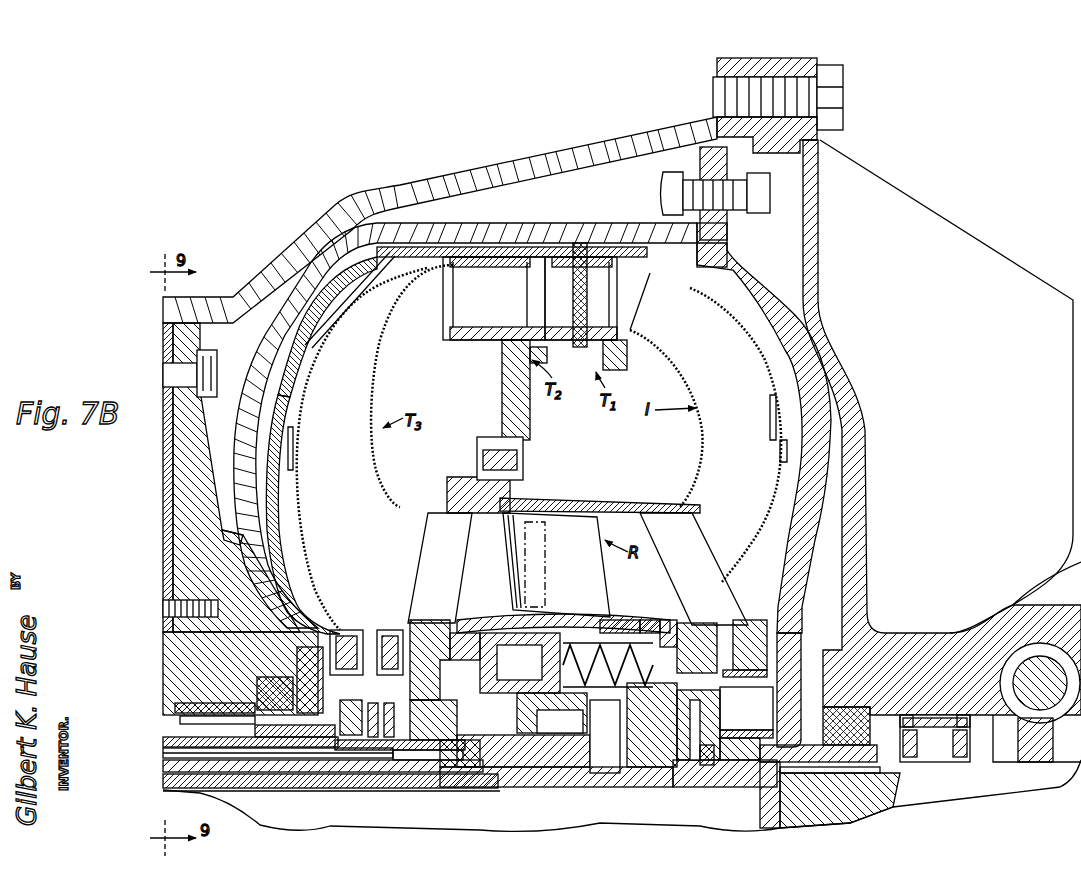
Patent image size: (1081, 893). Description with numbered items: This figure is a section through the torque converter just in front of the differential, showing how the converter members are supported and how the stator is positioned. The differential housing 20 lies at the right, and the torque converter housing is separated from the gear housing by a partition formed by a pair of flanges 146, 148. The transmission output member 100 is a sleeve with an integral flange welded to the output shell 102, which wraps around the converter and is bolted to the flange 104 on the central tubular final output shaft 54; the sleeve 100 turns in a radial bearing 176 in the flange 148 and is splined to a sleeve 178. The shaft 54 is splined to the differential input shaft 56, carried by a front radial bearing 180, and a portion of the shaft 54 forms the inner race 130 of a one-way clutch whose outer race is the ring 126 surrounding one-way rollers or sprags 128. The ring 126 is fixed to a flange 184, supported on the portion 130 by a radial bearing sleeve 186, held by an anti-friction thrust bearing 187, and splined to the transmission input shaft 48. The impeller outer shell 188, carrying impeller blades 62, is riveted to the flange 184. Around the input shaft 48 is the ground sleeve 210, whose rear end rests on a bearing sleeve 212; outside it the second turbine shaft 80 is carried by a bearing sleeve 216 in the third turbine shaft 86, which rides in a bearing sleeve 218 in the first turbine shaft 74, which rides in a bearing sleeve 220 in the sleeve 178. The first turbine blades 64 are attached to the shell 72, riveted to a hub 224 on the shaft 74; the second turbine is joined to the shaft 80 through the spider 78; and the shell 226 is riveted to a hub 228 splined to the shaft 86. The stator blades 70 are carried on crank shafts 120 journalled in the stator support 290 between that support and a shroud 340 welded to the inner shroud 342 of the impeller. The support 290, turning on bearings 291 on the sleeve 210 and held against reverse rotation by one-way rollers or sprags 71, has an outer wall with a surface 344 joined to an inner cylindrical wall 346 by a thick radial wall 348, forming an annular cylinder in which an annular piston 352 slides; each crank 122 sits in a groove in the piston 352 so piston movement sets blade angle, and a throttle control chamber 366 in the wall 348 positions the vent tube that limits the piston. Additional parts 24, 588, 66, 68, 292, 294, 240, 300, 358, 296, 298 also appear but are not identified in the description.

The outer housing shell 24 is at (520, 162).
The bolt and spacer flange 588 is at (712, 152).
The differential housing 20 is at (935, 218).
The hub chamber 66 is at (485, 268).
The first turbine blades 64 is at (597, 275).
The flange 104 is at (745, 285).
The liner band 68 is at (320, 375).
The impeller blades 62 is at (762, 382).
The shell 72 is at (270, 440).
The flange 146 is at (165, 460).
The flange 148 is at (190, 490).
The output shell 102 is at (195, 523).
The shell 226 is at (296, 478).
The spider 78 is at (465, 493).
The blades 70 is at (560, 520).
The shroud 340 is at (592, 504).
The inner shroud 342 is at (696, 450).
The outer shell 188 is at (788, 472).
The crank shafts 120 is at (545, 545).
The hub 224 is at (357, 625).
The hub 228 is at (390, 626).
The stator support 290 is at (485, 620).
The expansible chamber 366 is at (553, 625).
The surface 344 is at (620, 624).
The thick annular or radial wall 348 is at (660, 624).
The flange 184 is at (690, 620).
The block 292 is at (740, 640).
The outer race 126 is at (760, 640).
The seal 294 is at (240, 538).
The transmission output member 100 is at (163, 664).
The radial bearing 176 is at (185, 710).
The sleeve 178 is at (205, 718).
The first turbine shaft 74 is at (165, 742).
The third turbine shaft 86 is at (165, 757).
The ground sleeve 210 is at (165, 773).
The transmission input shaft 48 is at (165, 790).
The bearing sleeve 220 is at (265, 740).
The bearing sleeve 218 is at (292, 742).
The bearing sleeve 216 is at (328, 742).
The second turbine shaft 80 is at (345, 756).
The ring 240 is at (390, 756).
The hub 300 is at (430, 742).
The annular piston 352 is at (460, 747).
The inner cylindrical wall 346 is at (523, 746).
The bearings 291 is at (545, 760).
The hub 358 is at (585, 768).
The bearing sleeve 212 is at (620, 772).
The anti-friction thrust bearing 187 is at (676, 775).
The radial bearing sleeve 186 is at (720, 772).
The one-way rollers or sprags 128 is at (765, 713).
The inner race 130 is at (740, 732).
The final output shaft 54 is at (813, 737).
The front radial bearing 180 is at (945, 733).
The differential input shaft 56 is at (980, 786).
The block 296 is at (402, 644).
The block 298 is at (417, 642).
The crank 122 is at (532, 712).
The one-way rollers or sprags 71 is at (598, 720).